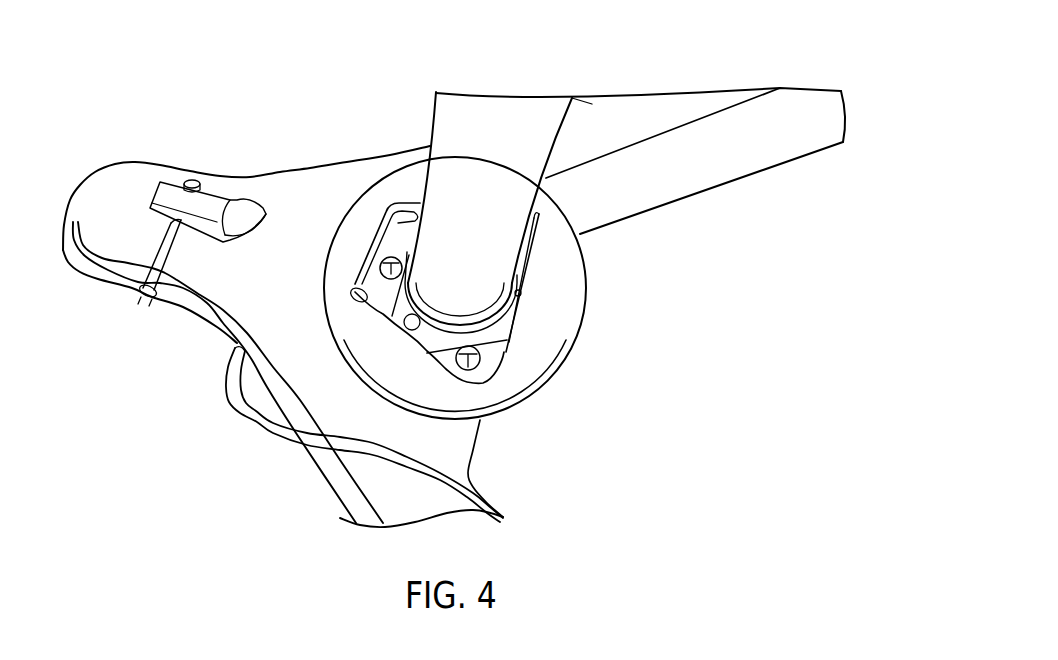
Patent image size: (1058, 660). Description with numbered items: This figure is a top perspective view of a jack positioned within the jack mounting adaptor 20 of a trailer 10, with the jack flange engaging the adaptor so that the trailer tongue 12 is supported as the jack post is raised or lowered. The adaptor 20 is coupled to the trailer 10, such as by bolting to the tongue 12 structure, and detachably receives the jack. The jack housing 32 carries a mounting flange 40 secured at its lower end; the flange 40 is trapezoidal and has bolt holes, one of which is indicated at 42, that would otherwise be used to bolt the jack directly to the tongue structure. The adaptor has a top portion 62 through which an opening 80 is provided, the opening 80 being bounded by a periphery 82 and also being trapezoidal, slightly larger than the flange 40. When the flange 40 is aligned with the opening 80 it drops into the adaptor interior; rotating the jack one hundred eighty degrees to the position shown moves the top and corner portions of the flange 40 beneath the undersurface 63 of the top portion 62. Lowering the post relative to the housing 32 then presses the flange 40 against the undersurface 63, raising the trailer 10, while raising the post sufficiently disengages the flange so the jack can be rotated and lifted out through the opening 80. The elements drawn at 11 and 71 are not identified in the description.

The trailer 10 is at (166, 320).
The saddle rail 11 is at (248, 303).
The tongue 12 is at (93, 191).
The jack mounting adaptor 20 is at (587, 269).
The jack housing 32 is at (447, 121).
The mounting flange 40 is at (424, 340).
The bolt hole 42 is at (420, 267).
The top portion 62 is at (570, 322).
The undersurface 63 is at (392, 222).
The fastener 71 is at (381, 262).
The opening 80 is at (534, 232).
The periphery 82 is at (351, 292).